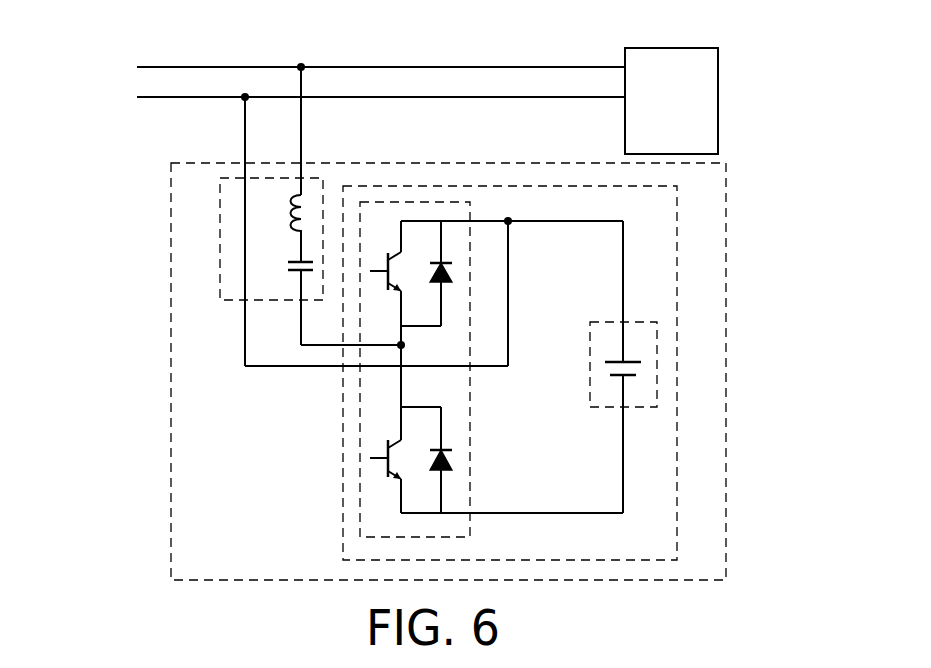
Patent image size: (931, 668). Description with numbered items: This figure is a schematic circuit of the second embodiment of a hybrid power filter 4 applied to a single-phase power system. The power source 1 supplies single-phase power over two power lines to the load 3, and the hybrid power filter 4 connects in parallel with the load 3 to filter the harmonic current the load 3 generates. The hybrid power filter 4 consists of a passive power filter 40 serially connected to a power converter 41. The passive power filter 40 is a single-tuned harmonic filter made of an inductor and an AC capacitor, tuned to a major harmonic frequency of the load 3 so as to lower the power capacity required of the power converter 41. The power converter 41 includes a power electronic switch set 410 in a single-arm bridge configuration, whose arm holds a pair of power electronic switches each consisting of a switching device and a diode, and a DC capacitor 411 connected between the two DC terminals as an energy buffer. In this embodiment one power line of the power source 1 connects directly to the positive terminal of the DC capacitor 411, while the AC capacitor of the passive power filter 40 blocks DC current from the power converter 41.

The power source 1 is at (112, 50).
The load 3 is at (705, 108).
The hybrid power filter 4 is at (714, 480).
The passive power filter 40 is at (225, 268).
The power converter 41 is at (672, 525).
The power electronic switch set 410 is at (366, 487).
The DC capacitor 411 is at (652, 346).